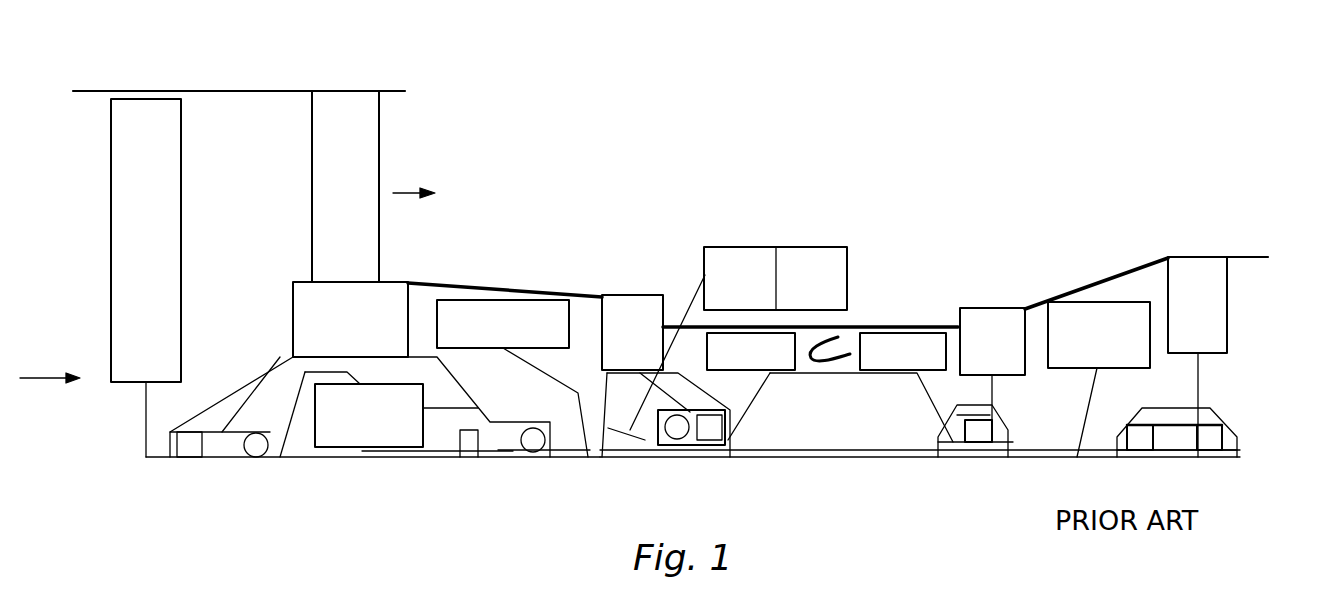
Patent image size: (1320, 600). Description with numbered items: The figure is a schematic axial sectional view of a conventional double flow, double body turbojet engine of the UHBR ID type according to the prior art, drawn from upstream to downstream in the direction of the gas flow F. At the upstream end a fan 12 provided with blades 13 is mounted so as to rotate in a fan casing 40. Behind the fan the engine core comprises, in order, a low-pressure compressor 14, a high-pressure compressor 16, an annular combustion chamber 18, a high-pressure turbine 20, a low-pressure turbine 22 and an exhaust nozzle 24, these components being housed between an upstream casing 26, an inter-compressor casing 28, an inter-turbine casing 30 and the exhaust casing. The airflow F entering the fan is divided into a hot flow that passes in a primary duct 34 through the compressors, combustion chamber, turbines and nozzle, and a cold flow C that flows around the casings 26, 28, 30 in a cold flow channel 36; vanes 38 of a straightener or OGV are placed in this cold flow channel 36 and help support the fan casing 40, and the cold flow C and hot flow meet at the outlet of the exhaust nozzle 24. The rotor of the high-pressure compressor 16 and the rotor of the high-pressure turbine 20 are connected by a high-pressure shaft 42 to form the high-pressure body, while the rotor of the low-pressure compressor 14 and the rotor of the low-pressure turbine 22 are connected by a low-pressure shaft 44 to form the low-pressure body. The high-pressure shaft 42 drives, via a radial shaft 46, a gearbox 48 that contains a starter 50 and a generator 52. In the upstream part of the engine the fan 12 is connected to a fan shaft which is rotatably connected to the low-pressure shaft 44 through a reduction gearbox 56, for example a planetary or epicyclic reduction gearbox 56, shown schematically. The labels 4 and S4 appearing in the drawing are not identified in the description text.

The direction of travel 4 is at (603, 331).
The fan 12 is at (202, 226).
The blades 13 is at (158, 160).
The low-pressure compressor 14 is at (508, 320).
The high-pressure compressor 16 is at (755, 357).
The annular combustion chamber 18 is at (838, 360).
The high-pressure turbine 20 is at (924, 345).
The low-pressure turbine 22 is at (1137, 312).
The exhaust nozzle 24 is at (1245, 257).
The upstream casing 26 is at (350, 319).
The inter-compressor casing 28 is at (632, 332).
The inter-turbine casing 30 is at (992, 341).
The primary duct 34 is at (422, 303).
The cold flow channel 36 is at (390, 157).
The vanes 38 is at (345, 186).
The fan casing 40 is at (230, 91).
The high-pressure shaft 42 is at (753, 413).
The low-pressure shaft 44 is at (578, 457).
The radial shaft 46 is at (648, 415).
The gearbox 48 is at (795, 247).
The starter 50 is at (741, 278).
The generator 52 is at (814, 278).
The reduction gearbox 56 is at (369, 415).
The cold flow C is at (400, 193).
The gas flow F is at (50, 365).
The station four S4 is at (146, 432).